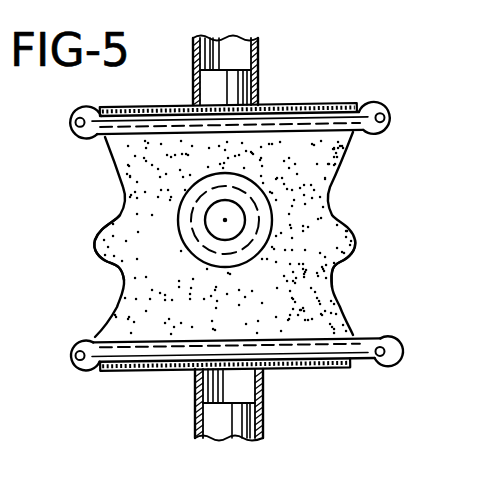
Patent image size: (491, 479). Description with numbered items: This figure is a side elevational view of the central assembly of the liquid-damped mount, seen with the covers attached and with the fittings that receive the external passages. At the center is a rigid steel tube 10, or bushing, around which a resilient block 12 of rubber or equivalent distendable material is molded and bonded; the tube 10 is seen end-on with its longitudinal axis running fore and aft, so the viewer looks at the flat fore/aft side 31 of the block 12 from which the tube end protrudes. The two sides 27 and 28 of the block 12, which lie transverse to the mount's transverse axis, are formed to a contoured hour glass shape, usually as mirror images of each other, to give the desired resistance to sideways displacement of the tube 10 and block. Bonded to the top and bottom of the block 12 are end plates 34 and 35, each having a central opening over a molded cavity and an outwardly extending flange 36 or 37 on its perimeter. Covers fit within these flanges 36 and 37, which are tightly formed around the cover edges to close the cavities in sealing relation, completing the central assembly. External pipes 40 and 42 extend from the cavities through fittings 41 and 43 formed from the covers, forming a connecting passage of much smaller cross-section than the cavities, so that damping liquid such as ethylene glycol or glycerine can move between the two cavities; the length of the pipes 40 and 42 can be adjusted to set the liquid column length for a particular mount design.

The tube 10 is at (256, 222).
The resilient block 12 is at (143, 187).
The side of the block 27 is at (115, 273).
The side of the block 28 is at (330, 267).
The fore/aft side of the block 31 is at (115, 218).
The end plate 34 is at (362, 133).
The end plate 35 is at (360, 340).
The flange 36 is at (388, 109).
The flange 37 is at (390, 348).
The external pipe 40 is at (258, 50).
The fitting 41 is at (235, 90).
The external pipe 42 is at (262, 428).
The fitting 43 is at (240, 388).